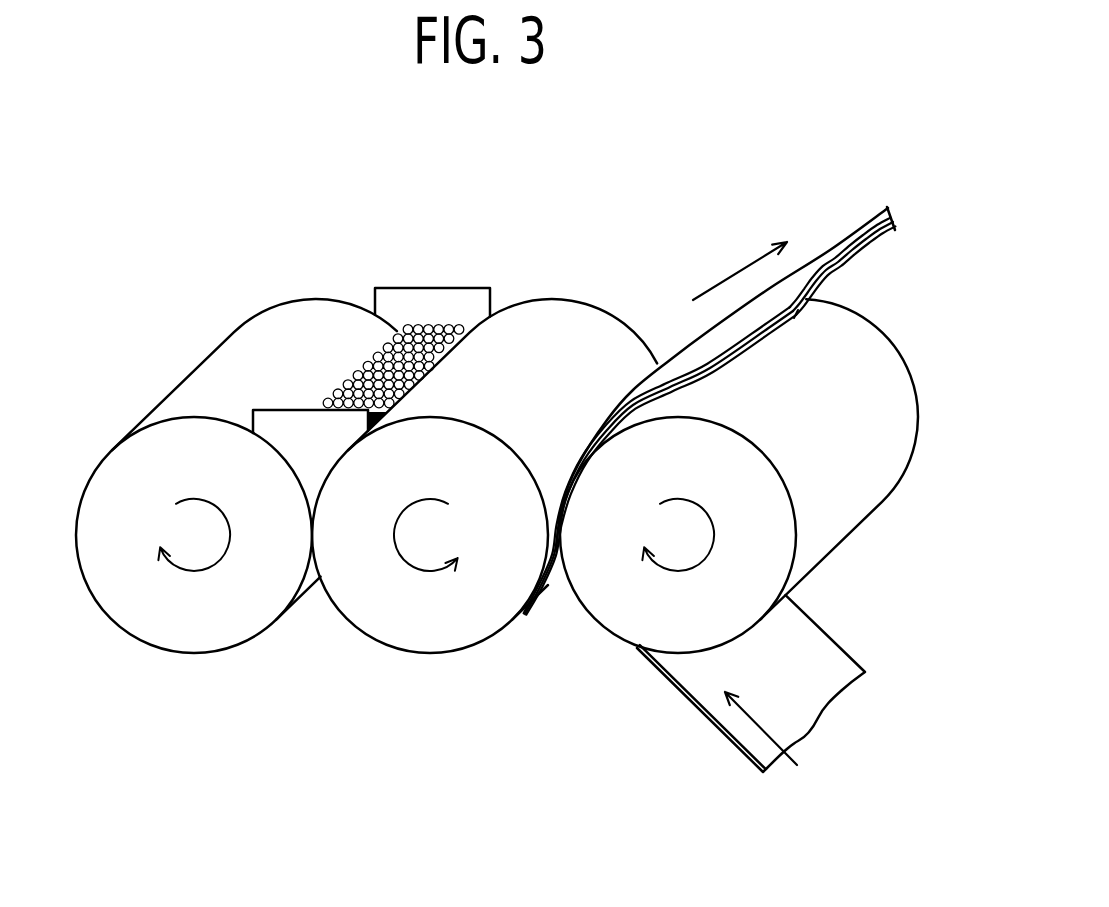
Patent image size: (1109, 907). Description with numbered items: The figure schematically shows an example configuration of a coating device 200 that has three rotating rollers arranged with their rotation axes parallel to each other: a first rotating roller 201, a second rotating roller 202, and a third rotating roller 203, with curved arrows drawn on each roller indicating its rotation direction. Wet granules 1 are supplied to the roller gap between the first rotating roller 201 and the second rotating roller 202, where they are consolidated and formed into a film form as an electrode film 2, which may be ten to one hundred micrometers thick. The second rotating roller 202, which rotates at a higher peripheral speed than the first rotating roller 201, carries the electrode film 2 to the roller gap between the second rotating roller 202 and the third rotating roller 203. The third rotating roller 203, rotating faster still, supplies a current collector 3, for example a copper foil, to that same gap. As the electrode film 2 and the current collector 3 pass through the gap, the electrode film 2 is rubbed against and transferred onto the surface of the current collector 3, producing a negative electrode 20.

The coating device 200 is at (191, 190).
The first rotating roller 201 is at (312, 301).
The second rotating roller 202 is at (547, 306).
The third rotating roller 203 is at (883, 348).
The wet granules 1 is at (425, 333).
The electrode film 2 is at (828, 257).
The current collector 3 is at (876, 240).
The negative electrode 20 is at (925, 164).